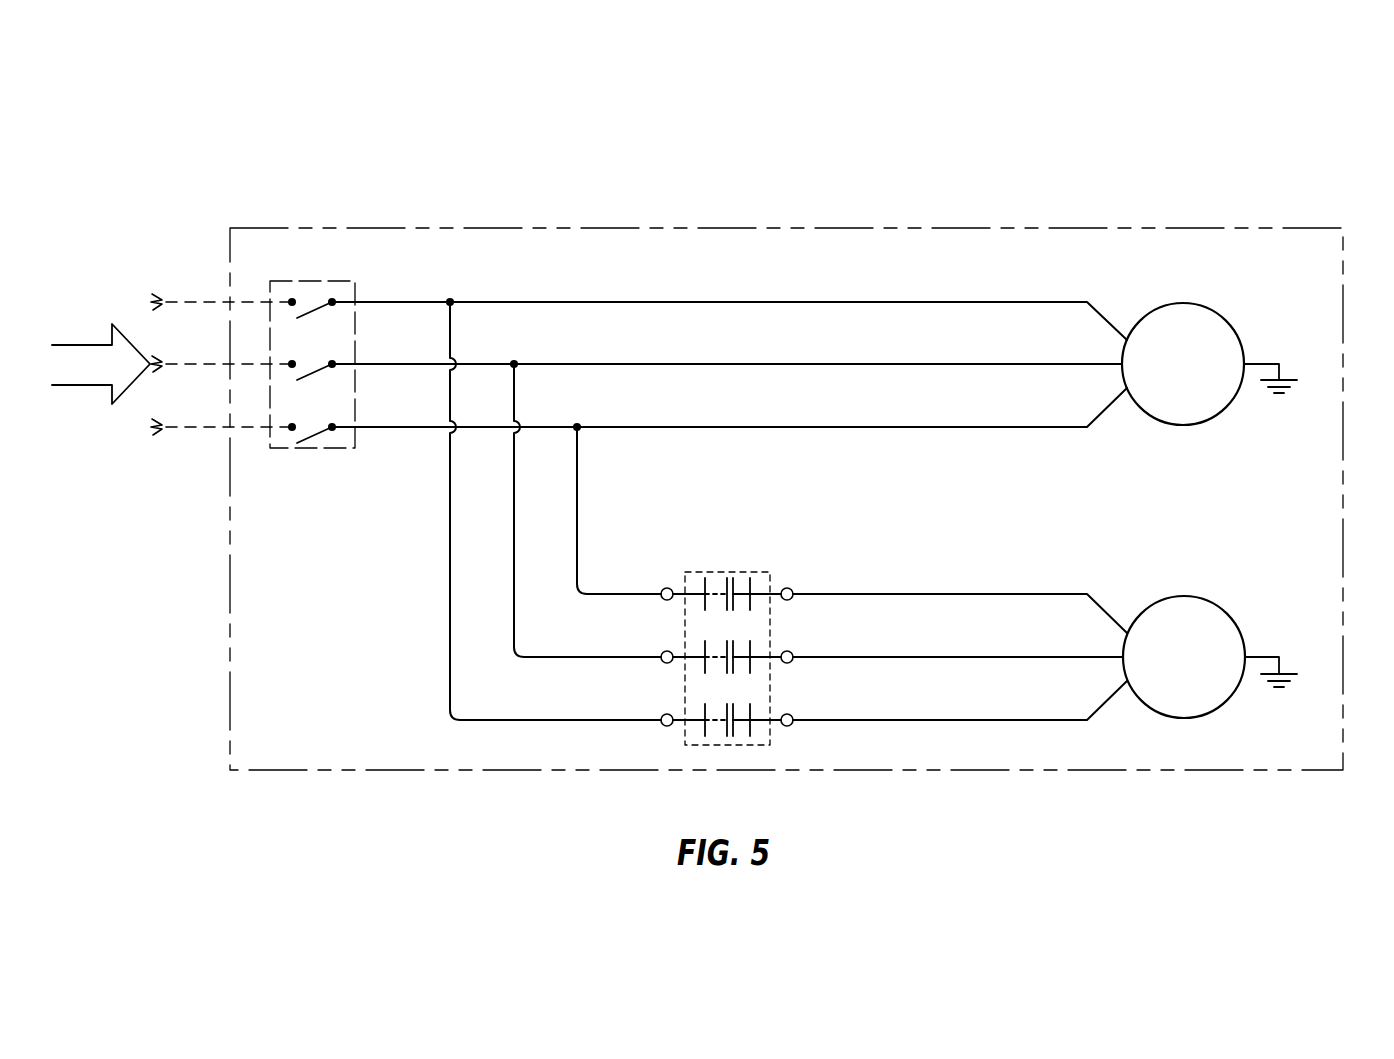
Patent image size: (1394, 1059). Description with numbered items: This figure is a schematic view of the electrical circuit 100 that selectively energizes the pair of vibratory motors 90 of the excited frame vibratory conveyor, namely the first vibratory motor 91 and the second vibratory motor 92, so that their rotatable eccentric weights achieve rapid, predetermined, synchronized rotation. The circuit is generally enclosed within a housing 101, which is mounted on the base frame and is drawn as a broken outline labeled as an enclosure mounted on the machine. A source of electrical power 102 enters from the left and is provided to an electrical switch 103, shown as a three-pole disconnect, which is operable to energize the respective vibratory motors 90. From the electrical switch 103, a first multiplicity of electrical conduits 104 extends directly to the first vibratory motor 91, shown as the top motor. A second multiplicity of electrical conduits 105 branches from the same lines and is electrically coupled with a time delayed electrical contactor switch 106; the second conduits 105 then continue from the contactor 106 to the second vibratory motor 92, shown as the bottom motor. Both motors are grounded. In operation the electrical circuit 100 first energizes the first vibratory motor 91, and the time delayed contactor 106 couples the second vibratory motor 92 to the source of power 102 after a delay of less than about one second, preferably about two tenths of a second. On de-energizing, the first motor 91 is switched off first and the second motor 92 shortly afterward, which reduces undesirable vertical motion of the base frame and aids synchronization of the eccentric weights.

The electrical circuit 100 is at (1135, 118).
The housing 101 is at (1067, 228).
The source of electrical power 102 is at (80, 343).
The electrical switch 103 is at (282, 448).
The first multiplicity of electrical conduits 104 is at (819, 427).
The second multiplicity of electrical conduits 105 is at (450, 467).
The time delayed electrical contactor switch 106 is at (742, 745).
The vibratory motors 90 is at (1255, 517).
The first vibratory motor 91 is at (1205, 346).
The second vibratory motor 92 is at (1209, 639).